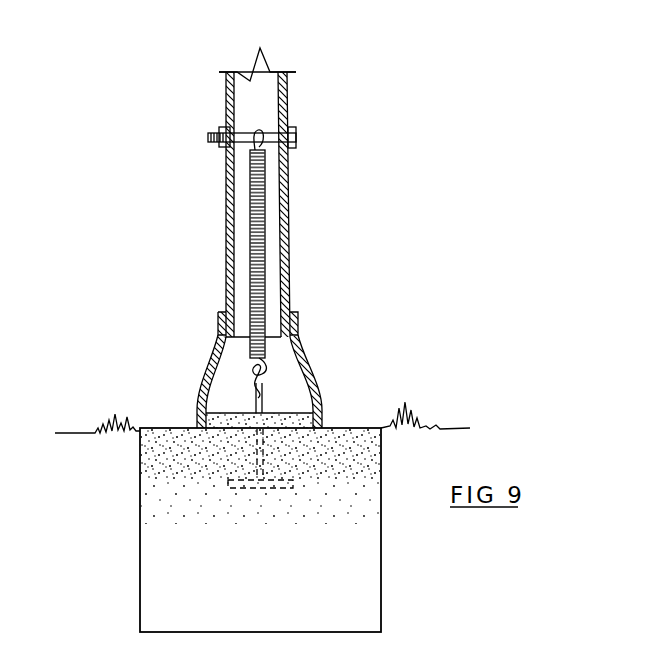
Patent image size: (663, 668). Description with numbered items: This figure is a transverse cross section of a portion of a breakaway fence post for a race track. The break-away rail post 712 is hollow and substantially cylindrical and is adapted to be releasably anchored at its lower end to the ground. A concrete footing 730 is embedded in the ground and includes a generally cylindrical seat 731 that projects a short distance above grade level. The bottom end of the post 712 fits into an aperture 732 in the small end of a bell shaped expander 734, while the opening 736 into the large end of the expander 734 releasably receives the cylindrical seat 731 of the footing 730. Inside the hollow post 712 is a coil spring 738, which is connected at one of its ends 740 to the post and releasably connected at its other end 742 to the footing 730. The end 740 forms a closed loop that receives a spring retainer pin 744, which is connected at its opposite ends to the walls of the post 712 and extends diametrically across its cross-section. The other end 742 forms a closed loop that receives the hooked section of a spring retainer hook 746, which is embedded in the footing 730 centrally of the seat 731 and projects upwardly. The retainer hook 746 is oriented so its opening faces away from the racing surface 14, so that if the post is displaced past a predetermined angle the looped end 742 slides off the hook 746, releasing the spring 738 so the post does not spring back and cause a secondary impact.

The racing surface 14 is at (251, 414).
The break-away rail post 712 is at (307, 52).
The concrete footing 730 is at (165, 428).
The cylindrical seat 731 is at (306, 421).
The aperture 732 is at (234, 330).
The bell shaped expander 734 is at (298, 336).
The opening 736 is at (226, 429).
The coil spring 738 is at (265, 230).
The end of coil spring 740 is at (254, 147).
The other end of coil spring 742 is at (249, 363).
The spring retainer pin 744 is at (268, 133).
The spring retainer hook 746 is at (265, 396).